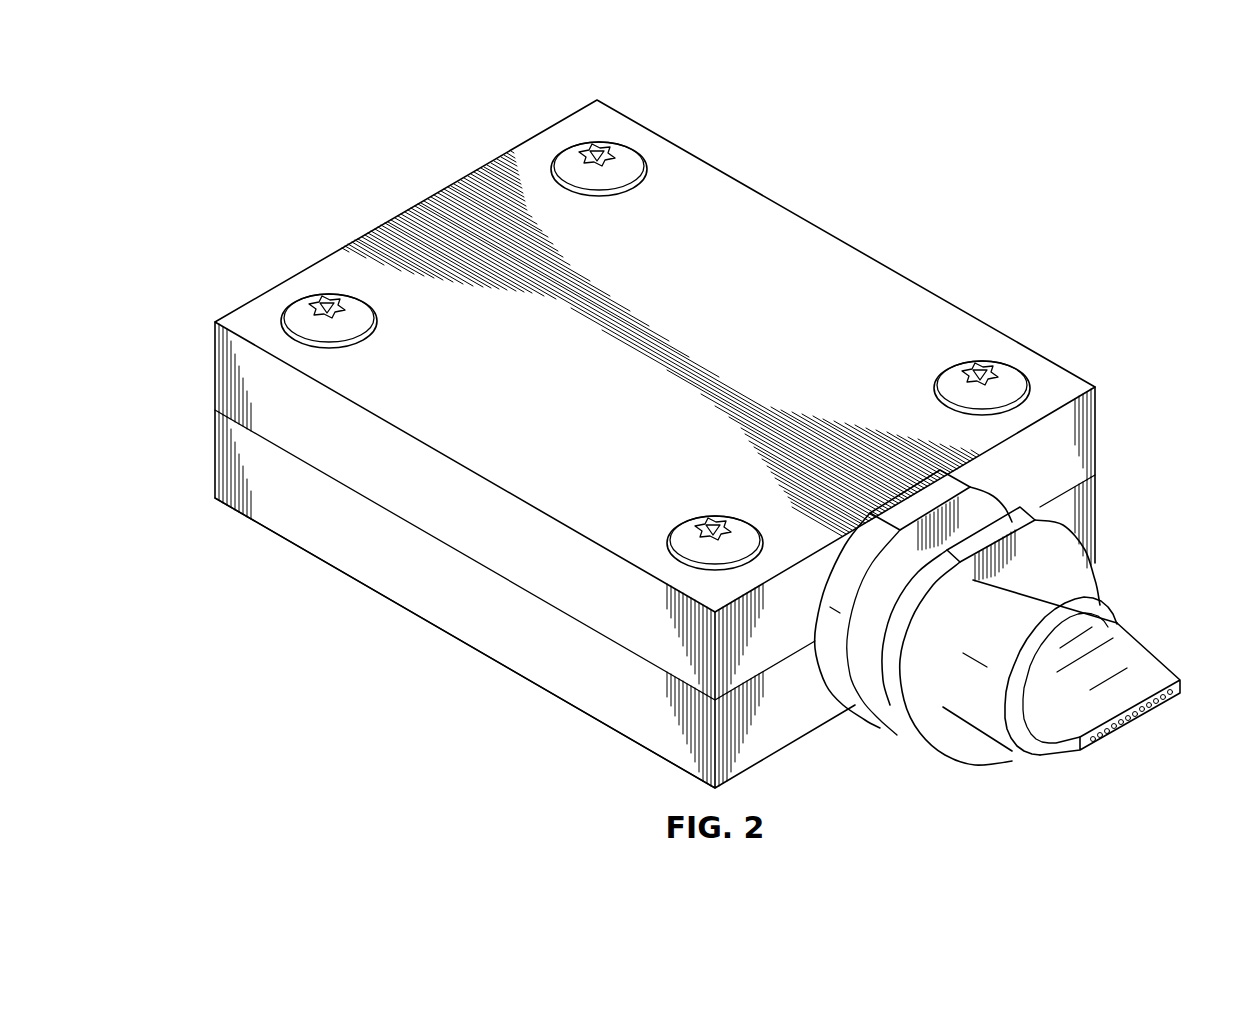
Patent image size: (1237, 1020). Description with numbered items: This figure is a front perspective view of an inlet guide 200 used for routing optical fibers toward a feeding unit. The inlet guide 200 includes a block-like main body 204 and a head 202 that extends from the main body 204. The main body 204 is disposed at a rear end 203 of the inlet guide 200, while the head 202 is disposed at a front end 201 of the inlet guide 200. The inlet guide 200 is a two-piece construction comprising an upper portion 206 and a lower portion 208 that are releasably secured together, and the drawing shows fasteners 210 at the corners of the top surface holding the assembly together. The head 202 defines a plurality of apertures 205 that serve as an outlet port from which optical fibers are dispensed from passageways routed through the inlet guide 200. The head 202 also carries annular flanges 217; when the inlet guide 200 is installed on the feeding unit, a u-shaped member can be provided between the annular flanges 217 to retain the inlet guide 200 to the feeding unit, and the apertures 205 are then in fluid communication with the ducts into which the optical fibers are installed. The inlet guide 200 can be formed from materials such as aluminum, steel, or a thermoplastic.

The inlet guide 200 is at (942, 182).
The front end 201 is at (1158, 461).
The head 202 is at (1118, 599).
The rear end 203 is at (422, 106).
The main body 204 is at (399, 202).
The apertures 205 is at (1152, 711).
The upper portion 206 is at (472, 549).
The lower portion 208 is at (471, 635).
The screws 210 is at (577, 154).
The annular flanges 217 is at (828, 680).